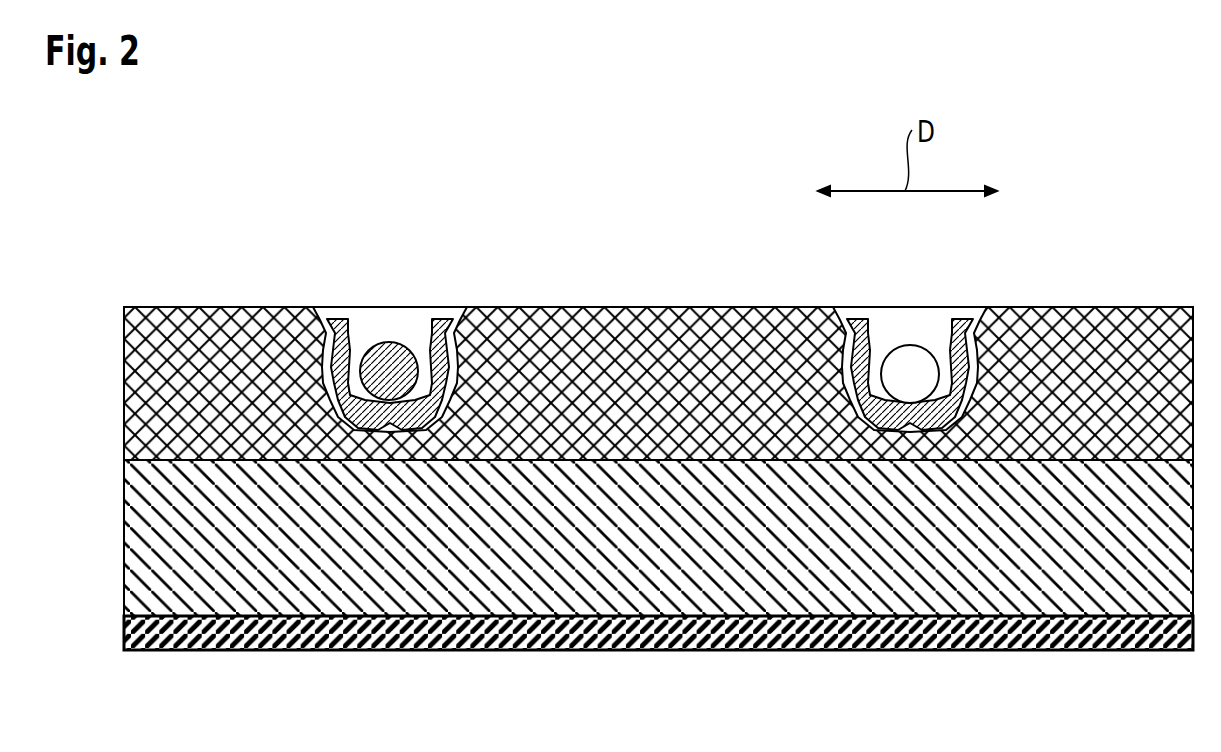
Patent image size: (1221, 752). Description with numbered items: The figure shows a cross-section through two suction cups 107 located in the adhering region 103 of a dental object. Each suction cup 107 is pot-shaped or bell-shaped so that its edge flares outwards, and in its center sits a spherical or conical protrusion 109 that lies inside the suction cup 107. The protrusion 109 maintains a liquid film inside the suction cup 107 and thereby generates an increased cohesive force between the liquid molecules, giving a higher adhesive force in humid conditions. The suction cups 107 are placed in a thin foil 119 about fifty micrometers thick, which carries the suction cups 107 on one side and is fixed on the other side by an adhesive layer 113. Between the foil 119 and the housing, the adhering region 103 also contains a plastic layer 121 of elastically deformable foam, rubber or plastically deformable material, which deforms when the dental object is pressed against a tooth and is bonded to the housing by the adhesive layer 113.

The adhering region 103 is at (174, 353).
The suction cup 107 is at (452, 343).
The protrusion 109 is at (395, 377).
The adhesive layer 113 is at (600, 635).
The foil 119 is at (647, 378).
The plastic layer 121 is at (420, 542).